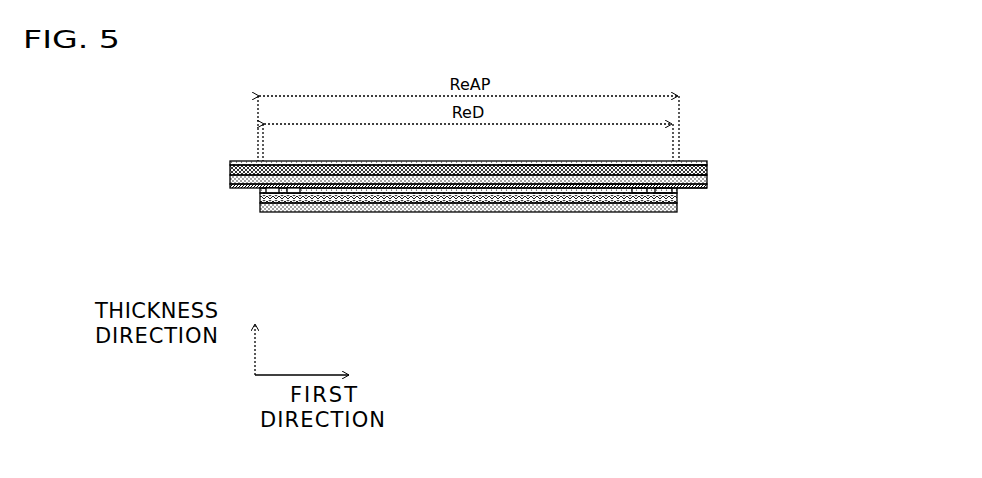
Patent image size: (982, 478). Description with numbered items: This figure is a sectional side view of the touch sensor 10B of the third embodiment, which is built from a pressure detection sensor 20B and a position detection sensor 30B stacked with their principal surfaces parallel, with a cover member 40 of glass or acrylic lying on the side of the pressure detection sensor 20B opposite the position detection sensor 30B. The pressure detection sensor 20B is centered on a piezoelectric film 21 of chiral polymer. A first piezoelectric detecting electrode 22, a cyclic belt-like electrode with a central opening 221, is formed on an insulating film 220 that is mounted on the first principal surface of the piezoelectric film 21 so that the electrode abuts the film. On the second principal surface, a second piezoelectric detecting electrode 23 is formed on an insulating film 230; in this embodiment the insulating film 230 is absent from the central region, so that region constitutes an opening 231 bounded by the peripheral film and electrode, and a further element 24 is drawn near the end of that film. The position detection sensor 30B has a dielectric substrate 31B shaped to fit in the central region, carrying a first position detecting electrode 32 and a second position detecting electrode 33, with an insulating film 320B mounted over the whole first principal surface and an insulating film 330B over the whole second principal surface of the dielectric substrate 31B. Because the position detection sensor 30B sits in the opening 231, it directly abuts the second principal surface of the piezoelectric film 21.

The touch sensor 10B is at (758, 81).
The pressure detection sensor 20B is at (748, 152).
The cover member 40 is at (528, 162).
The first piezoelectric detecting electrode 22 is at (707, 169).
The opening 221 is at (578, 168).
The insulating film 220 is at (679, 166).
The piezoelectric film 21 is at (707, 179).
The second piezoelectric detecting electrode 23 is at (707, 186).
The opening 231 is at (622, 183).
The insulating film 230 is at (693, 190).
The spacer 24 is at (679, 193).
The position detection sensor 30B is at (399, 247).
The insulating film 320B is at (397, 191).
The first position detecting electrode 32 is at (271, 193).
The second position detecting electrode 33 is at (296, 193).
The dielectric substrate 31B is at (346, 198).
The insulating film 330B is at (330, 208).